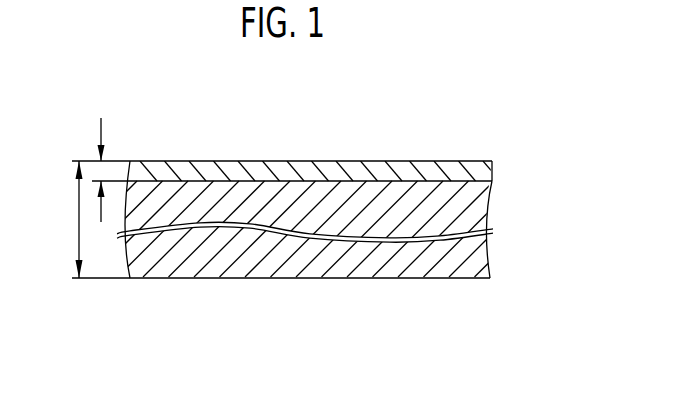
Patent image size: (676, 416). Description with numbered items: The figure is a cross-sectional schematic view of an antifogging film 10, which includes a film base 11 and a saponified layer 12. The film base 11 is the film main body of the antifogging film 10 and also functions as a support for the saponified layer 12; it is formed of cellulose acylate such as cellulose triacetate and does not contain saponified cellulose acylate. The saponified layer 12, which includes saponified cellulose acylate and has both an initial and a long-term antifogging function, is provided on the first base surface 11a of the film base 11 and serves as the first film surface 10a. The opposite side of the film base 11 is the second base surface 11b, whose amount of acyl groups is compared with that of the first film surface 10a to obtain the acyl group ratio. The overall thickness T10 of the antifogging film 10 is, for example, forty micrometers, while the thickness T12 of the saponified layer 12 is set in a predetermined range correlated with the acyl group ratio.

The antifogging film 10 is at (318, 230).
The first film surface 10a is at (188, 161).
The film base 11 is at (488, 210).
The first base surface 11a is at (303, 181).
The second base surface 11b is at (302, 279).
The saponified layer 12 is at (493, 181).
The thickness of the antifogging film T10 is at (82, 219).
The thickness of the saponified layer T12 is at (108, 155).